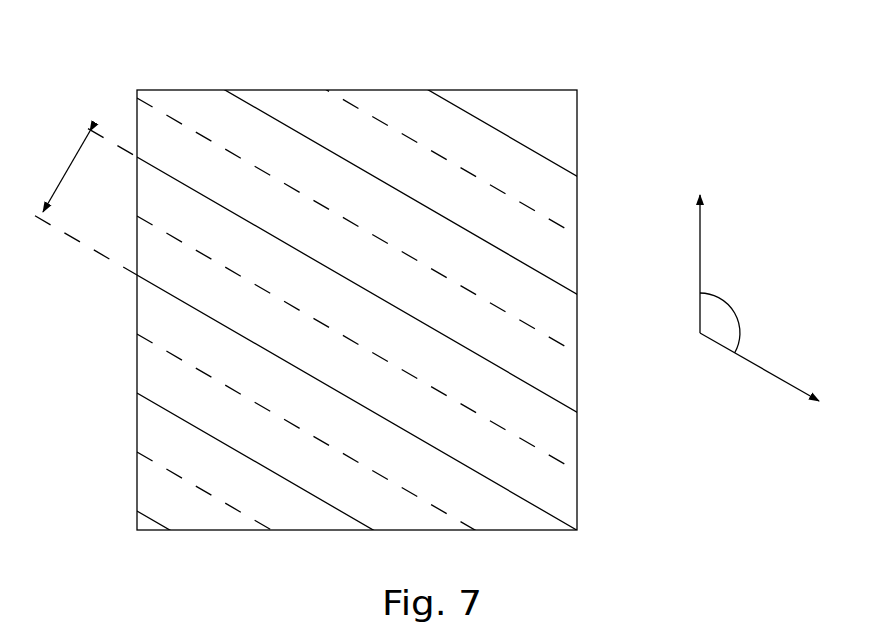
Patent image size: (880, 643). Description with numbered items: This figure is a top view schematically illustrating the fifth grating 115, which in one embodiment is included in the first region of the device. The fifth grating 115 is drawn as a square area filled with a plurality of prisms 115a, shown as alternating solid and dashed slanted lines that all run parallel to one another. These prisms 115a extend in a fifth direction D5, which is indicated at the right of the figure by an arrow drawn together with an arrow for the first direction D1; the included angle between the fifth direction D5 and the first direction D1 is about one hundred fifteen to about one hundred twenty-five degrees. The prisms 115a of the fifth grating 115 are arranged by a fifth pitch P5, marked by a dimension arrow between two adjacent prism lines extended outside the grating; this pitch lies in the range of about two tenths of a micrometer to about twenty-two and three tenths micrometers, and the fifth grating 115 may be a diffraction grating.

The fifth grating 115 is at (488, 90).
The prisms 115a is at (243, 108).
The fifth pitch P5 is at (84, 202).
The first direction D1 is at (677, 264).
The fifth direction D5 is at (759, 367).